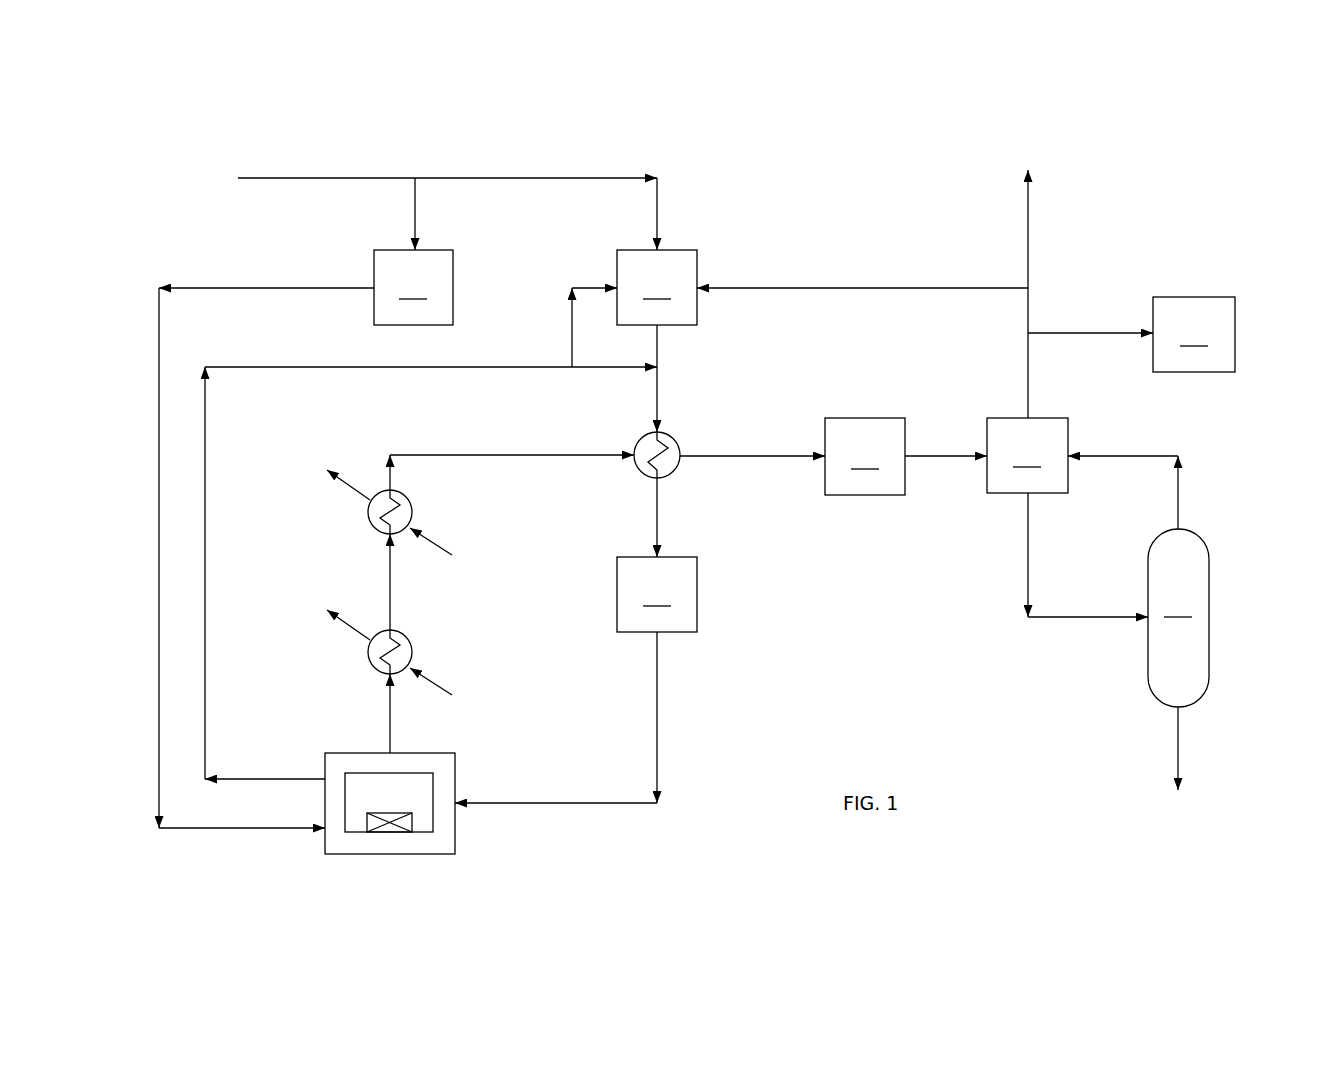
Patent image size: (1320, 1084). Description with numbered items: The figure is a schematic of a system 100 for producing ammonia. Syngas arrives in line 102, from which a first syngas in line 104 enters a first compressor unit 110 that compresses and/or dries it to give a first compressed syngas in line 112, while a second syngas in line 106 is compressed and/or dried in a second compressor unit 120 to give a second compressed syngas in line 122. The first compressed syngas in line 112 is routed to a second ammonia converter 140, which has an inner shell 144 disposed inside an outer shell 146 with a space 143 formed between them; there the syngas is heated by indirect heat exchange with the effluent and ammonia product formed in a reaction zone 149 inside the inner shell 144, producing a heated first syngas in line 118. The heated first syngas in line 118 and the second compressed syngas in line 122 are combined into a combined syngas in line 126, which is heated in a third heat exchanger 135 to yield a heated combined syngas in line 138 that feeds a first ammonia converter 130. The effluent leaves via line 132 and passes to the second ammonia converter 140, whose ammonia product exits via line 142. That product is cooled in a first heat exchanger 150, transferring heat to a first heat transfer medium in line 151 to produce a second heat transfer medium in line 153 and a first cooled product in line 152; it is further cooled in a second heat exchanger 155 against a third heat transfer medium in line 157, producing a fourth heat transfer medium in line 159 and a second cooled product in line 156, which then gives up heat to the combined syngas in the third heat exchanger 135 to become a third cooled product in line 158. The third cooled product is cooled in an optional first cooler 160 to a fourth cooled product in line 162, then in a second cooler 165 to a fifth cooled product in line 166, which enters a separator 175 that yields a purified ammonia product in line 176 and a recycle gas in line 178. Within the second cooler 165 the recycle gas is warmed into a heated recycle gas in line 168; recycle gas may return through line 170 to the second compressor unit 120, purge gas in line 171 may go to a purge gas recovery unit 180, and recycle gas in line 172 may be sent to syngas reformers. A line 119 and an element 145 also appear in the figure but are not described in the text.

The system 100 is at (823, 143).
The syngas line 102 is at (268, 178).
The first syngas line 104 is at (415, 215).
The second syngas line 106 is at (657, 215).
The first compressor unit 110 is at (413, 287).
The first compressed syngas line 112 is at (231, 288).
The heated first syngas line 118 is at (205, 445).
The recycle portion to unit 120 119 is at (572, 332).
The second compressor unit 120 is at (657, 287).
The second compressed syngas line 122 is at (657, 347).
The combined syngas line 126 is at (657, 400).
The first ammonia converter 130 is at (657, 594).
The effluent line 132 is at (657, 668).
The third heat exchanger 135 is at (675, 478).
The heated combined syngas line 138 is at (657, 517).
The second ammonia converter 140 is at (420, 858).
The ammonia product line 142 is at (390, 720).
The space 143 is at (337, 843).
The inner shell 144 is at (348, 832).
The reactor interior zone 145 is at (362, 788).
The outer shell 146 is at (455, 760).
The reaction zone 149 is at (412, 822).
The first heat exchanger 150 is at (410, 637).
The first heat transfer medium line 151 is at (445, 688).
The first cooled product line 152 is at (390, 578).
The second heat transfer medium line 153 is at (357, 632).
The second heat exchanger 155 is at (410, 497).
The second cooled product line 156 is at (540, 455).
The third heat transfer medium line 157 is at (445, 548).
The third cooled product line 158 is at (785, 456).
The fourth heat transfer medium line 159 is at (357, 492).
The first cooler 160 is at (865, 456).
The fourth cooled product line 162 is at (940, 456).
The second cooler 165 is at (1027, 455).
The fifth cooled product line 166 is at (1073, 617).
The heated recycle gas line 168 is at (1028, 365).
The recycle gas line 170 is at (943, 288).
The purge gas line 171 is at (1108, 333).
The recycle gas line 172 is at (1028, 200).
The separator 175 is at (1178, 618).
The purified ammonia product line 176 is at (1178, 737).
The recycle gas line 178 is at (1143, 456).
The purge gas recovery unit 180 is at (1194, 334).